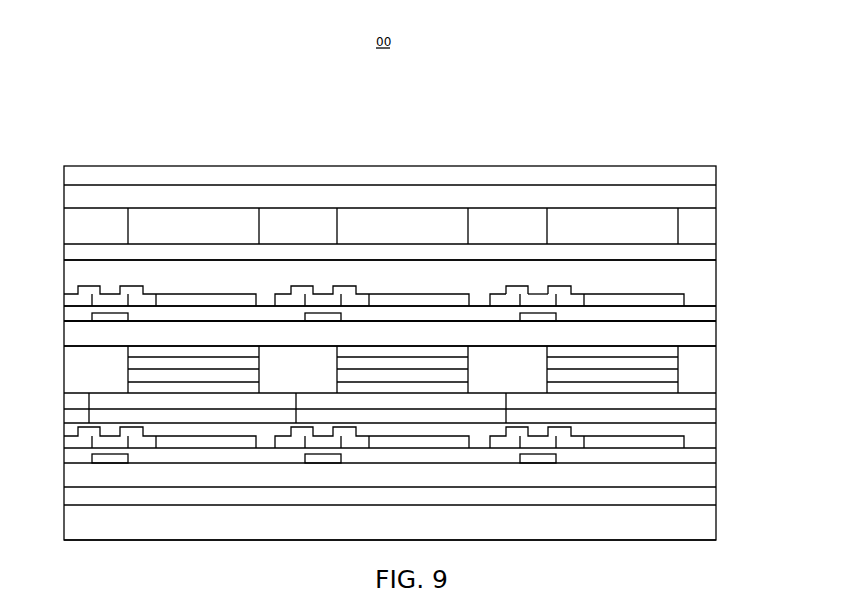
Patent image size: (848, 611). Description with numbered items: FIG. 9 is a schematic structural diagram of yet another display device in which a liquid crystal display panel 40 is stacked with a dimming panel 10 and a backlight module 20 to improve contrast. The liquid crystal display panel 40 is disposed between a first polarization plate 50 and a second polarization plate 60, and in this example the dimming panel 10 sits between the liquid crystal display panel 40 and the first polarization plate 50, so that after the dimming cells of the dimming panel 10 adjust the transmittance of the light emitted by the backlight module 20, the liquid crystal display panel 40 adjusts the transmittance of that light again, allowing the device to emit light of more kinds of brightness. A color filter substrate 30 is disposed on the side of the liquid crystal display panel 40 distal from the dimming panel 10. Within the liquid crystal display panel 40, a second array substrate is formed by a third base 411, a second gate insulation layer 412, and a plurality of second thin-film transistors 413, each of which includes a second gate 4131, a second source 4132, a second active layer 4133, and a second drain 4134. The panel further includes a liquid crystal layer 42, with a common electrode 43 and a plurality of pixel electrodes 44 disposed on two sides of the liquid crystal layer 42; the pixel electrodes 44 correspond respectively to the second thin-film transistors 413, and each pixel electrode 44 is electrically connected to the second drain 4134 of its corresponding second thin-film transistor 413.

The dimming panel 10 is at (52, 348).
The backlight module 20 is at (56, 528).
The color filter substrate 30 is at (52, 188).
The liquid crystal display panel 40 is at (417, 206).
The first polarization plate 50 is at (56, 498).
The second polarization plate 60 is at (56, 175).
The liquid crystal layer 42 is at (725, 280).
The common electrode 43 is at (725, 254).
The pixel electrode 44 is at (687, 301).
The third base 411 is at (725, 337).
The second gate insulation layer 412 is at (725, 315).
The second thin-film transistor 413 is at (568, 194).
The second gate 4131 is at (543, 310).
The second source 4132 is at (511, 277).
The second active layer 4133 is at (535, 285).
The second drain 4134 is at (563, 277).